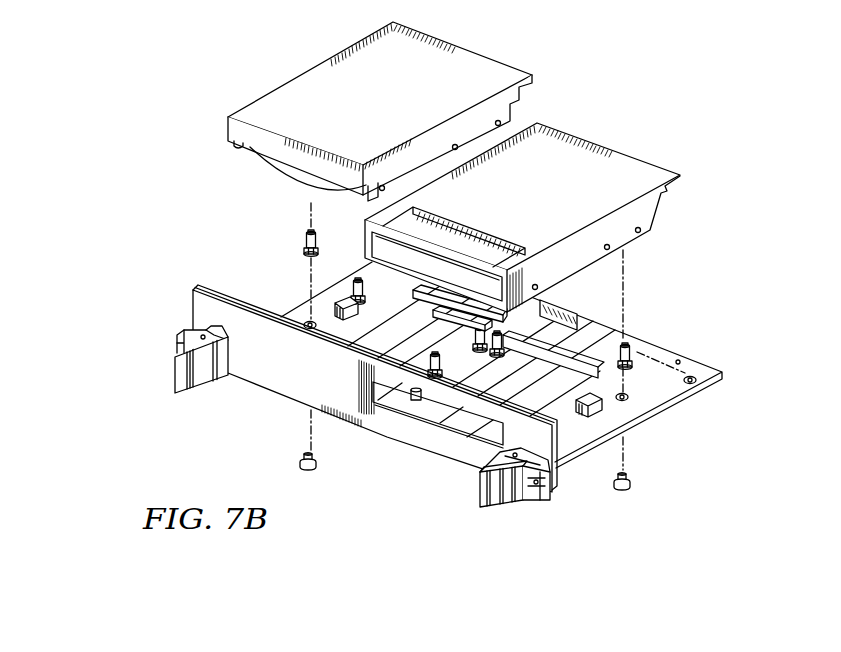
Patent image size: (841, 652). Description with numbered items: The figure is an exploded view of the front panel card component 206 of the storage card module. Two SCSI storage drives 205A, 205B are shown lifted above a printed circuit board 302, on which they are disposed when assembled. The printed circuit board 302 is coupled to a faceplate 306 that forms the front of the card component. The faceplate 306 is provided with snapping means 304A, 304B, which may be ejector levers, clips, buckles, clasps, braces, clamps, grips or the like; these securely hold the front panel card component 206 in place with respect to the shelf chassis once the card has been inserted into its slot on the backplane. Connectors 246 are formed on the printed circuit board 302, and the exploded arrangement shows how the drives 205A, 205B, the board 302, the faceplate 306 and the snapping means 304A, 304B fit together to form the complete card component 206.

The front panel card component 206 is at (122, 160).
The SCSI storage drive 205A is at (278, 93).
The SCSI storage drive 205B is at (635, 162).
The connectors 246 is at (563, 313).
The printed circuit board 302 is at (658, 413).
The snapping means 304A is at (190, 387).
The snapping means 304B is at (493, 505).
The faceplate 306 is at (388, 435).